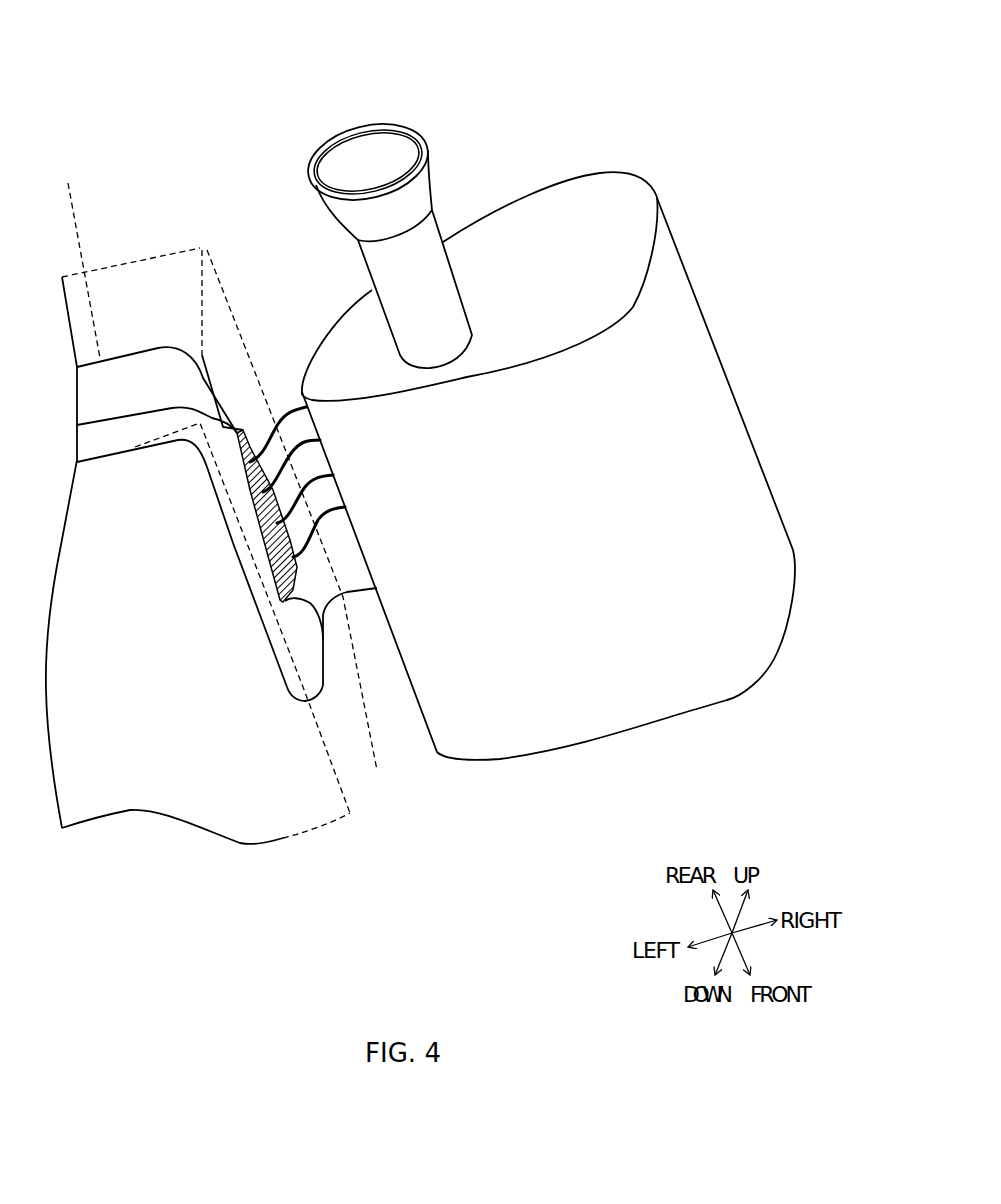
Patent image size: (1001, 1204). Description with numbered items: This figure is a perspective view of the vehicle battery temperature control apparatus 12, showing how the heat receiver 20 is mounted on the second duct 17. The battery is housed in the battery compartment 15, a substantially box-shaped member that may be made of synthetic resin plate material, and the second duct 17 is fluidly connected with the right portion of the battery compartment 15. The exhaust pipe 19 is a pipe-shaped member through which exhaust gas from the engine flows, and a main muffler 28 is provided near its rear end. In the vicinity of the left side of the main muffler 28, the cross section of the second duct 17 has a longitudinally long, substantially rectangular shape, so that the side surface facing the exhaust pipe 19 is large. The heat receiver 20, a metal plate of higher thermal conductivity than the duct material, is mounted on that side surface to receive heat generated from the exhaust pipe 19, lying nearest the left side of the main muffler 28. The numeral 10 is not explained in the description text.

The seat assembly 10 is at (240, 63).
The vehicle battery temperature control apparatus 12 is at (292, 113).
The battery compartment 15 is at (178, 252).
The second duct 17 is at (81, 261).
The exhaust pipe 19 is at (427, 140).
The heat receiver 20 is at (377, 770).
The main muffler 28 is at (625, 170).